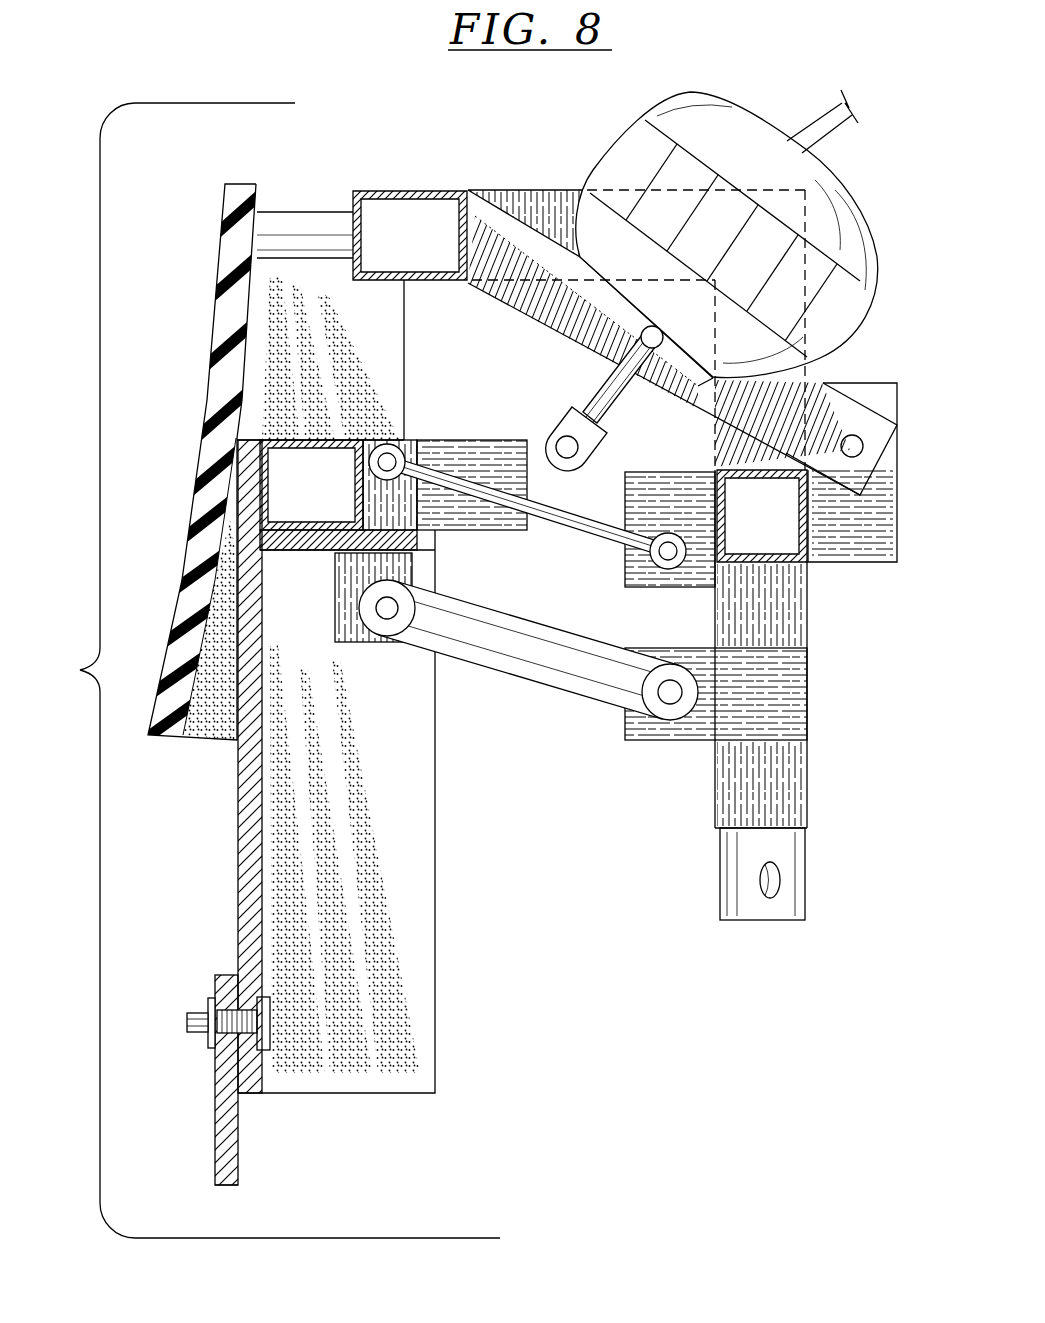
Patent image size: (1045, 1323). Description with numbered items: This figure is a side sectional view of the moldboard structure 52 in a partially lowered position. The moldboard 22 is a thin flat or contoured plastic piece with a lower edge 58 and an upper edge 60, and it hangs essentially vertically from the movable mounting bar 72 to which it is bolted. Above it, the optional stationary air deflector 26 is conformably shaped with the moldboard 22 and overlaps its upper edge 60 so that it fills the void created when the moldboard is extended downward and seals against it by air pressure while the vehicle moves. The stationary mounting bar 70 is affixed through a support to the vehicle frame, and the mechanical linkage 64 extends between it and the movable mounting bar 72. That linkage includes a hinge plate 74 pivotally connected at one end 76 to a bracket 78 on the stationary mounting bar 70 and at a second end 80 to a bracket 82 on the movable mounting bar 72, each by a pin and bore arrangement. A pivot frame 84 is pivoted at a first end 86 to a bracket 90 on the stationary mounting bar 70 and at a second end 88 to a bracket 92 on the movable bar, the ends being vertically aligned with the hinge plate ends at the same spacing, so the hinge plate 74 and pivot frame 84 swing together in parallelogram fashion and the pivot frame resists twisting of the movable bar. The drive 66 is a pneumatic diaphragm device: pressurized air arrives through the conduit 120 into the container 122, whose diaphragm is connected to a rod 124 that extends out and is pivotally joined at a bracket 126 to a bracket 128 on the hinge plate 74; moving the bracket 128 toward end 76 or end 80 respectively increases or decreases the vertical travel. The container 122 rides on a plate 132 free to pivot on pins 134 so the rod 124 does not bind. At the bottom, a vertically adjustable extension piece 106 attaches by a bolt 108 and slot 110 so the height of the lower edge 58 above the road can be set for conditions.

The moldboard 22 is at (238, 842).
The stationary air deflector 26 is at (222, 304).
The moldboard structure 52 is at (269, 670).
The lower edge 58 is at (224, 1186).
The upper edge 60 is at (247, 437).
The mechanical linkage 64 is at (517, 788).
The drive 66 is at (852, 160).
The stationary mounting bar 70 is at (383, 188).
The movable mounting bar 72 is at (338, 424).
The hinge plate 74 is at (570, 493).
The first end of hinge plate 76 is at (668, 552).
The bracket 78 is at (637, 470).
The second end of hinge plate 80 is at (392, 458).
The bracket 82 is at (392, 503).
The pivot frame 84 is at (508, 645).
The first end of pivot frame 86 is at (670, 692).
The second end of pivot frame 88 is at (388, 610).
The bracket 90 is at (694, 727).
The bracket 92 is at (398, 567).
The vertically adjustable extension piece 106 is at (215, 1135).
The bolt 108 is at (190, 1010).
The slot 110 is at (223, 1050).
The conduit 120 is at (800, 123).
The container 122 is at (864, 234).
The rod 124 is at (597, 385).
The bracket 126 is at (573, 428).
The bracket 128 is at (596, 546).
The plate 132 is at (612, 306).
The pins 134 is at (653, 345).